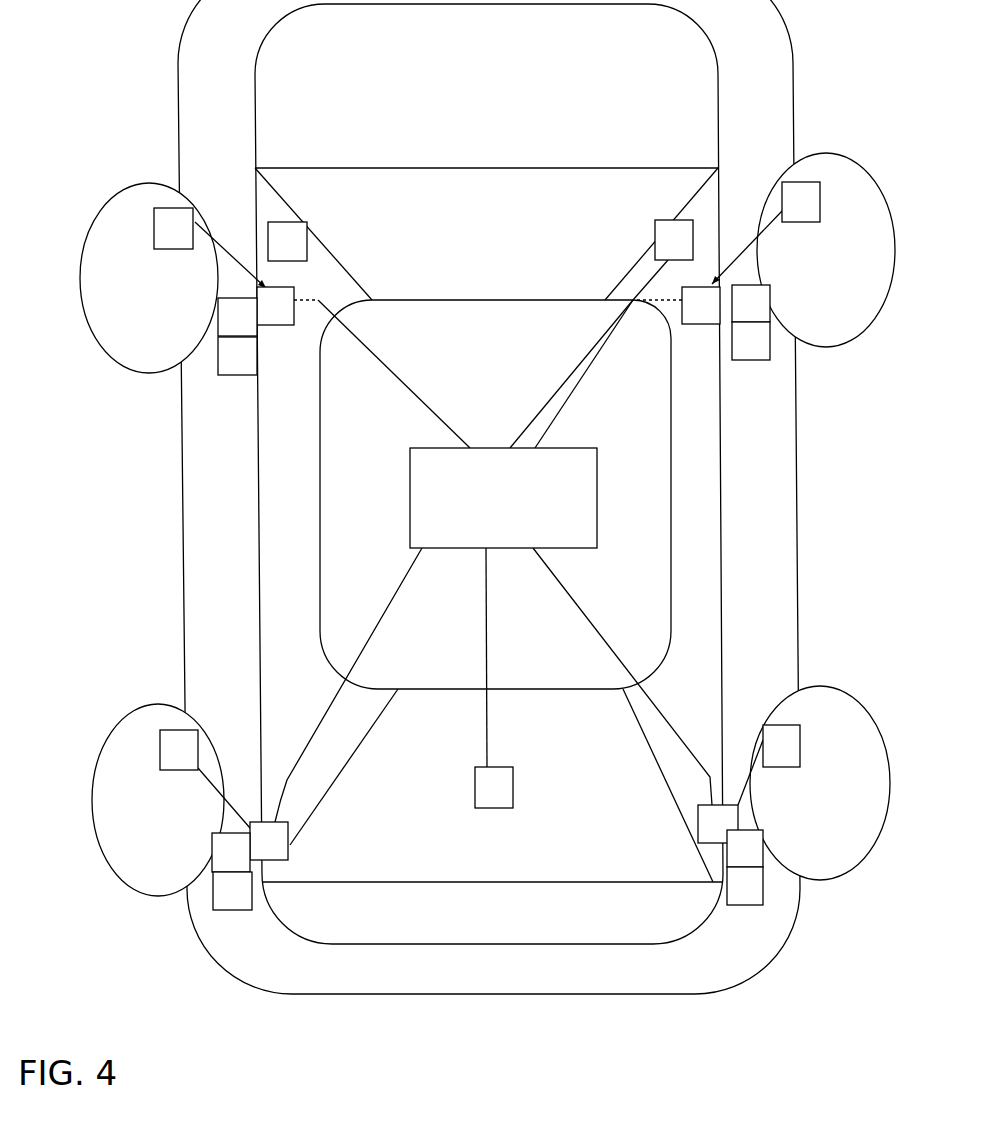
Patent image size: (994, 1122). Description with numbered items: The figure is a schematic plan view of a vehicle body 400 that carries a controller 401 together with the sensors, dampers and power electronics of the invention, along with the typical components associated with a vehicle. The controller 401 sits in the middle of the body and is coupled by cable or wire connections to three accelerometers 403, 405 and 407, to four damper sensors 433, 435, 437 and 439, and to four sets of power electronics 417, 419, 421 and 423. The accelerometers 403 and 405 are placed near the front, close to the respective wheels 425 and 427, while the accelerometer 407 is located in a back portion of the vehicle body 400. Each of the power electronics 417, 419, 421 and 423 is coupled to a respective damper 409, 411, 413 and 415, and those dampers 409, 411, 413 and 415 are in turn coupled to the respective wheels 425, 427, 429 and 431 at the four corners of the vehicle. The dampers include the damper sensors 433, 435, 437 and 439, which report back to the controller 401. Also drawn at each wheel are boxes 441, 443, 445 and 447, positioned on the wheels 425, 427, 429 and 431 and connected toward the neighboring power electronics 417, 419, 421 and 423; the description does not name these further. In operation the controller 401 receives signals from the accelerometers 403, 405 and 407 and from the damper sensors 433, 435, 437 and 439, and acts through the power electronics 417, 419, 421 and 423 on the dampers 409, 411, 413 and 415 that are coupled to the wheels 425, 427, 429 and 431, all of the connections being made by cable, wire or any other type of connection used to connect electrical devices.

The vehicle body 400 is at (517, 86).
The controller 401 is at (487, 522).
The accelerometer 403 is at (274, 250).
The accelerometer 405 is at (660, 248).
The accelerometer 407 is at (480, 796).
The damper 409 is at (224, 325).
The damper 411 is at (737, 312).
The damper 413 is at (217, 861).
The damper 415 is at (731, 857).
The power electronics 417 is at (262, 314).
The power electronics 419 is at (687, 314).
The power electronics 421 is at (255, 849).
The power electronics 423 is at (704, 832).
The wheel 425 is at (131, 293).
The wheel 427 is at (808, 266).
The wheel 429 is at (137, 816).
The wheel 431 is at (801, 799).
The damper sensor 433 is at (224, 364).
The damper sensor 435 is at (737, 349).
The damper sensor 437 is at (219, 899).
The damper sensor 439 is at (731, 894).
The front left tire sensor 441 is at (160, 237).
The front right tire sensor 443 is at (787, 211).
The rear left tire sensor 445 is at (165, 759).
The rear right tire sensor 447 is at (768, 754).